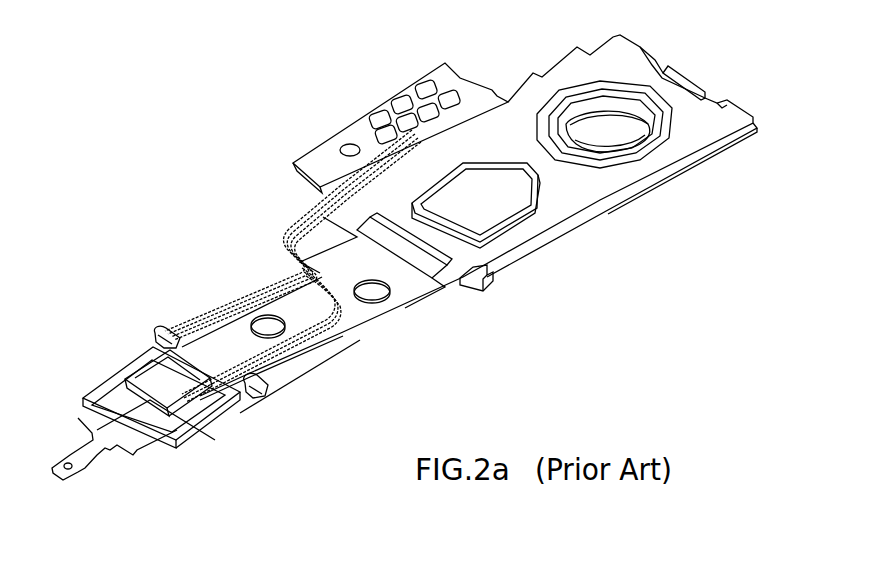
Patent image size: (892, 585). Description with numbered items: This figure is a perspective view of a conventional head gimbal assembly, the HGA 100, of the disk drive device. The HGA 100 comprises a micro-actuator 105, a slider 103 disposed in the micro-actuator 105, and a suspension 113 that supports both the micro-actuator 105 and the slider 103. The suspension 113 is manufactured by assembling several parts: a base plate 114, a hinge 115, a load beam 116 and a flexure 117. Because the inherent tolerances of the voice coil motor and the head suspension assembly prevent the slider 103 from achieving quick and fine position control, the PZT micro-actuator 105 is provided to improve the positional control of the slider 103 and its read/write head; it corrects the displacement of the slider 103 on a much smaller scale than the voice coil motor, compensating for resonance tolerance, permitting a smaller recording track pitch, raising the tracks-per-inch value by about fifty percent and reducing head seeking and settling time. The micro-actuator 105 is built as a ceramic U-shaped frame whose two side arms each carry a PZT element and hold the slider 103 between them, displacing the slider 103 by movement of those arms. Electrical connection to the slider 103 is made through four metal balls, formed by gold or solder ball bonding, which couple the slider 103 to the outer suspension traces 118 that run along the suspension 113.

The HGA 100 is at (268, 209).
The slider 103 is at (130, 383).
The micro-actuator 105 is at (220, 410).
The suspension 113 is at (598, 244).
The base plate 114 is at (677, 80).
The hinge 115 is at (627, 180).
The load beam 116 is at (263, 373).
The flexure 117 is at (472, 88).
The outer suspension traces 118 is at (158, 328).